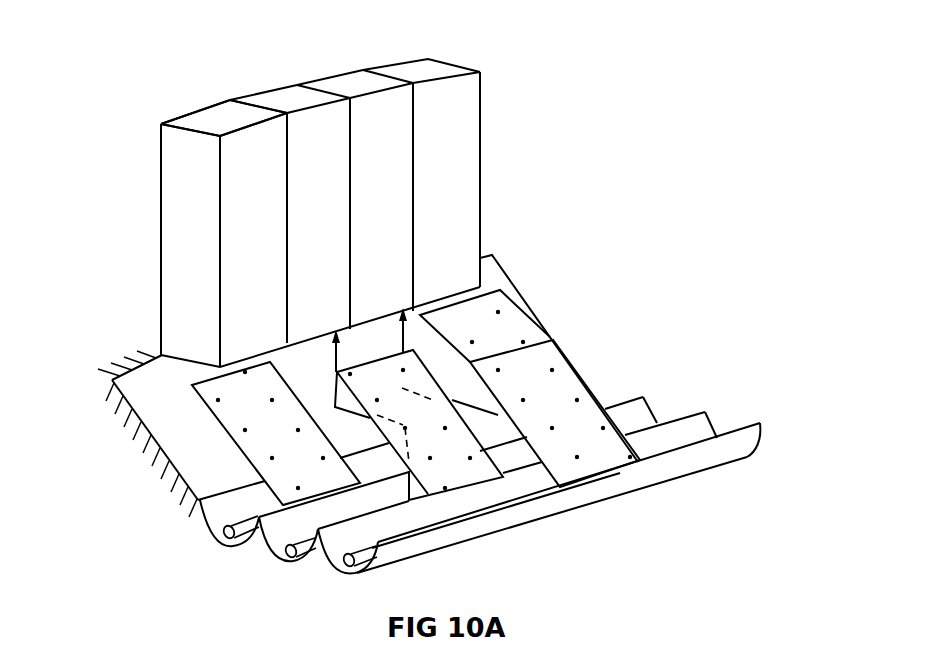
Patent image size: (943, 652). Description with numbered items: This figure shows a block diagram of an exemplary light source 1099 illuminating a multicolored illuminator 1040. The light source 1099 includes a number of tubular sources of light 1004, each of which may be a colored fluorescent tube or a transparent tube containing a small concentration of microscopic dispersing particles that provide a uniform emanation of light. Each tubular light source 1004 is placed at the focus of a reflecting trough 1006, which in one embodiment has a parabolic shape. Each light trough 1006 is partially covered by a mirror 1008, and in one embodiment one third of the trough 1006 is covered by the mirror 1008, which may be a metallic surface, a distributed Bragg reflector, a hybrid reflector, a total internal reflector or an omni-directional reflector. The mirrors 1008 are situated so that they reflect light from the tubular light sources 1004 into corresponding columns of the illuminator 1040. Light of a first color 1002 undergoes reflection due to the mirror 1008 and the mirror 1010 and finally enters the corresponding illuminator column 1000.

The illuminator column 1000 is at (350, 82).
The multicolored illuminator 1040 is at (190, 112).
The light source 1099 is at (605, 38).
The light of a first color 1002 is at (403, 332).
The tubular source of light 1004 is at (377, 552).
The reflecting trough 1006 is at (527, 518).
The mirror 1008 is at (638, 462).
The mirror 1010 is at (130, 395).